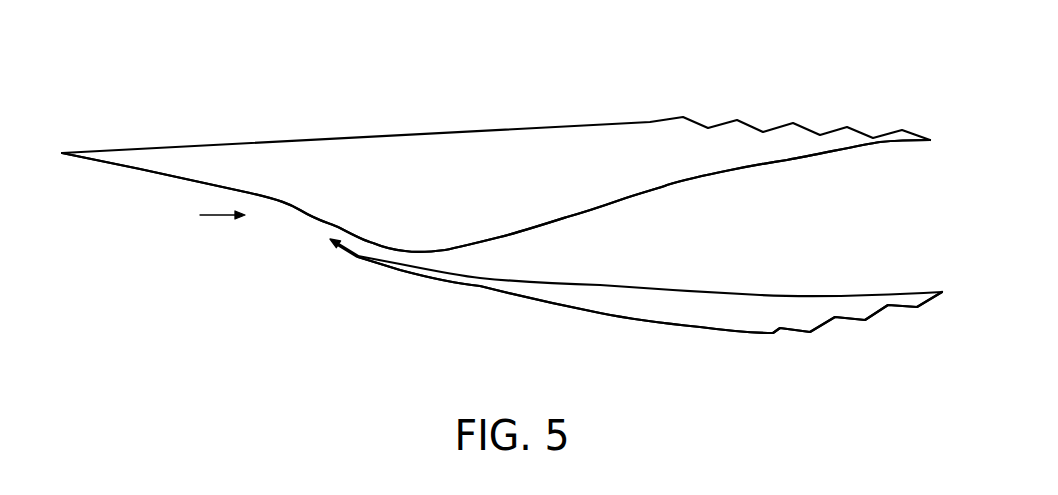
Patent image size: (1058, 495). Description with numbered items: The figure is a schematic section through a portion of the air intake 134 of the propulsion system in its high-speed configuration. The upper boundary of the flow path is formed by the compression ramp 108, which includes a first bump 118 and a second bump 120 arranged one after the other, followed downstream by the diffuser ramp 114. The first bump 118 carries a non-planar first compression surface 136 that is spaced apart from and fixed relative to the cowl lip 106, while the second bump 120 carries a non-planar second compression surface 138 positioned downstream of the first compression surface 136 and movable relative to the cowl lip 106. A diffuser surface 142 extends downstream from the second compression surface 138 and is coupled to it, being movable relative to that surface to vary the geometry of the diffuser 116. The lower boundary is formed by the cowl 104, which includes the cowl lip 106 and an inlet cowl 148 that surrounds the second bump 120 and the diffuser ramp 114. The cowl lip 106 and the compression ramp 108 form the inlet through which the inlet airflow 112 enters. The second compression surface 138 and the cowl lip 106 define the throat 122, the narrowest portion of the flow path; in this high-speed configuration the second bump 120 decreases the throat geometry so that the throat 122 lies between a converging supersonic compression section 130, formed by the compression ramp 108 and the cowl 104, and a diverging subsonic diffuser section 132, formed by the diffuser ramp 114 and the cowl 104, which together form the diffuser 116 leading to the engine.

The cowl 104 is at (840, 347).
The cowl lip 106 is at (325, 241).
The compression ramp 108 is at (317, 198).
The inlet airflow 112 is at (212, 215).
The diffuser ramp 114 is at (663, 176).
The diffuser 116 is at (887, 259).
The first bump 118 is at (137, 170).
The second bump 120 is at (461, 243).
The throat 122 is at (357, 258).
The supersonic compression section 130 is at (384, 289).
The subsonic diffuser section 132 is at (731, 348).
The air intake 134 is at (122, 107).
The first compression surface 136 is at (193, 182).
The second compression surface 138 is at (434, 249).
The diffuser surface 142 is at (786, 160).
The inlet cowl 148 is at (632, 319).